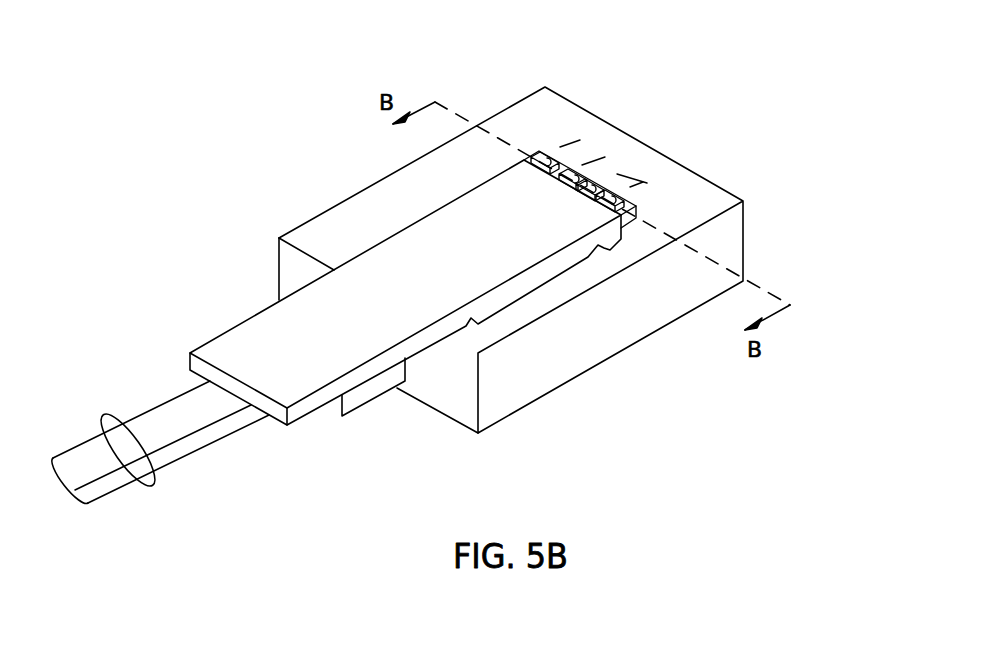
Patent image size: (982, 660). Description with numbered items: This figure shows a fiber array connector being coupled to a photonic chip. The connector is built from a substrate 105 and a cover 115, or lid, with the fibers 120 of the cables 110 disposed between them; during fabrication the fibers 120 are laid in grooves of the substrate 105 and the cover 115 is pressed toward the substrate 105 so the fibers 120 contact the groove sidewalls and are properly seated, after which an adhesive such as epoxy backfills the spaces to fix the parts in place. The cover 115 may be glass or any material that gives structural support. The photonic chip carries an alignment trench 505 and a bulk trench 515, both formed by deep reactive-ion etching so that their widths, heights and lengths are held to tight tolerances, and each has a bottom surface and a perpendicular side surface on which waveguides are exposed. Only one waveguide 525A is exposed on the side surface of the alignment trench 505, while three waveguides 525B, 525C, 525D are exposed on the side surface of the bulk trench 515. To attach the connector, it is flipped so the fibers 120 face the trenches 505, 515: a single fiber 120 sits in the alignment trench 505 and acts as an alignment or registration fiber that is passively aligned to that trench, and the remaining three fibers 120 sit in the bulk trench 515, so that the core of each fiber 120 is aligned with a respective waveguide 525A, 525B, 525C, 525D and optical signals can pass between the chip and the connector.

The substrate 105 is at (380, 260).
The cables 110 is at (105, 413).
The cover 115 is at (373, 387).
The fibers 120 is at (608, 203).
The alignment trench 505 is at (538, 152).
The bulk trench 515 is at (595, 173).
The waveguide 525A is at (577, 143).
The waveguide 525B is at (595, 158).
The waveguide 525C is at (617, 175).
The waveguide 525D is at (667, 203).